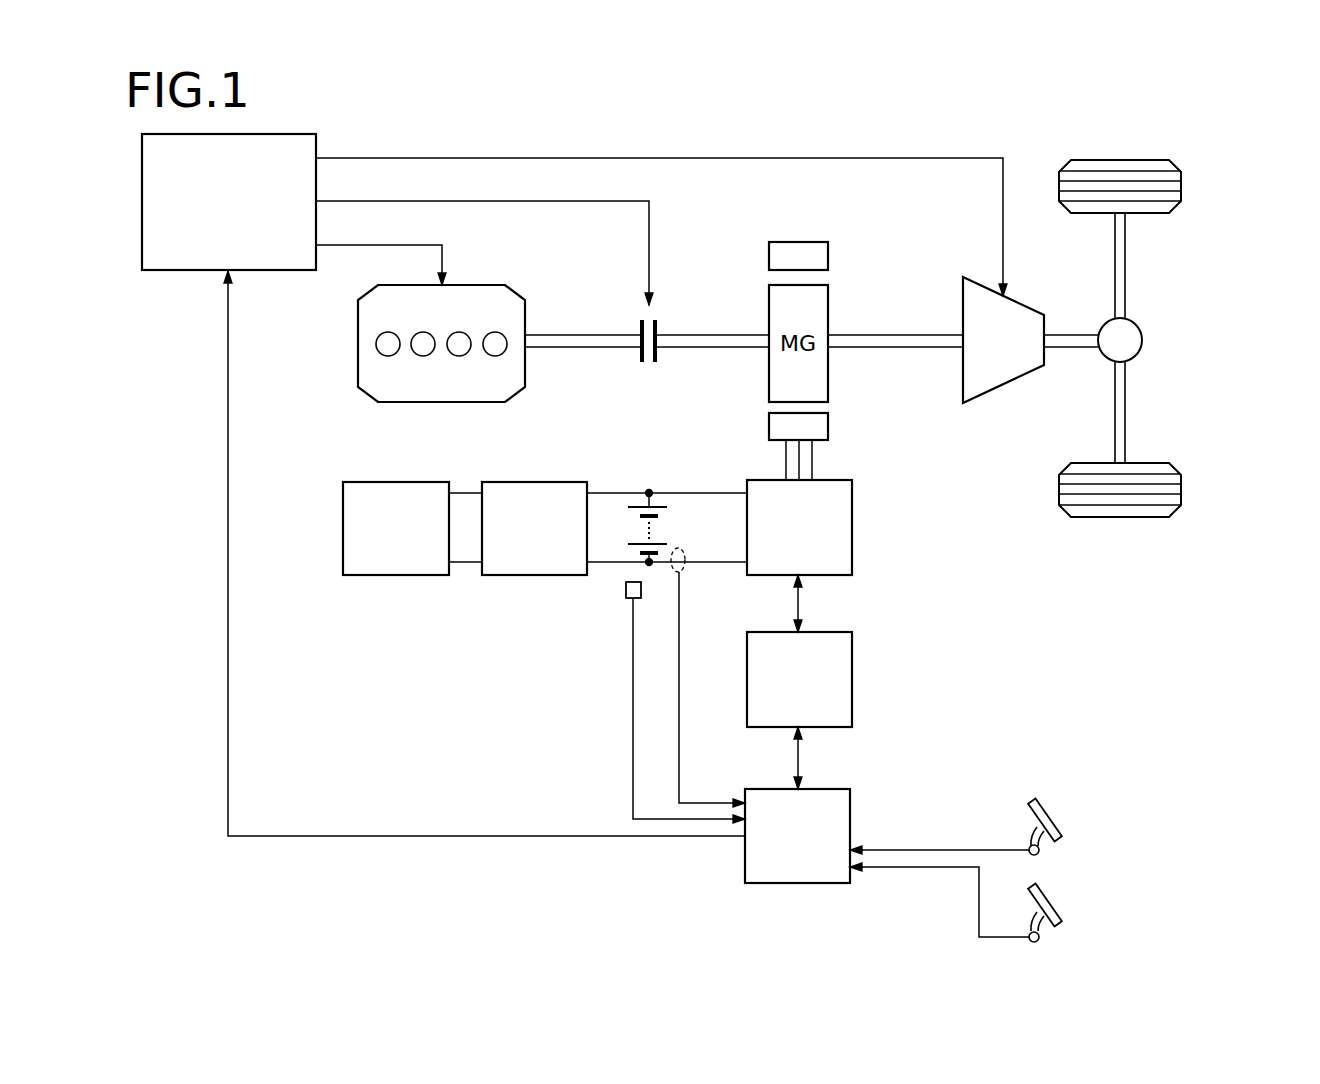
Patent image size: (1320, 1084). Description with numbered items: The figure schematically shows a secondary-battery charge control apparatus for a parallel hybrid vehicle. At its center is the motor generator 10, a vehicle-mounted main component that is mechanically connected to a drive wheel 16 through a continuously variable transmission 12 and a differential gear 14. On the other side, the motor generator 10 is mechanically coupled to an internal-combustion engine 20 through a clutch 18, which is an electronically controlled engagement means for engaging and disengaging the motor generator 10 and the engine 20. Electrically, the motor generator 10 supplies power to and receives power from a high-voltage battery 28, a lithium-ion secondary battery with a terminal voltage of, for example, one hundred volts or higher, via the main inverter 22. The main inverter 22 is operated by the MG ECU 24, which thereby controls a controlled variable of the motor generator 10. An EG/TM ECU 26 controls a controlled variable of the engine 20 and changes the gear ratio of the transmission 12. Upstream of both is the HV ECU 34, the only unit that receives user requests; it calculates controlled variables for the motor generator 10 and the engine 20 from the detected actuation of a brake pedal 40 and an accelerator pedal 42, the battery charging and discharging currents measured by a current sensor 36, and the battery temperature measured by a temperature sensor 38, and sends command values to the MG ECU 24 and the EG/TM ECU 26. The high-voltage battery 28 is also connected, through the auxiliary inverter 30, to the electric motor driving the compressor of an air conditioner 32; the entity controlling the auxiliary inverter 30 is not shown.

The motor generator 10 is at (853, 282).
The continuously variable transmission 12 is at (1026, 306).
The differential gear 14 is at (1143, 338).
The drive wheel 16 is at (1157, 160).
The clutch 18 is at (659, 328).
The internal-combustion engine 20 is at (493, 285).
The main inverter 22 is at (853, 485).
The MG ECU 24 is at (853, 637).
The EG/TM ECU 26 is at (287, 271).
The high-voltage battery 28 is at (667, 507).
The auxiliary inverter 30 is at (570, 482).
The air conditioner 32 is at (433, 482).
The HV ECU 34 is at (851, 794).
The current sensor 36 is at (676, 573).
The temperature sensor 38 is at (626, 599).
The brake pedal 40 is at (1056, 824).
The accelerator pedal 42 is at (1056, 909).